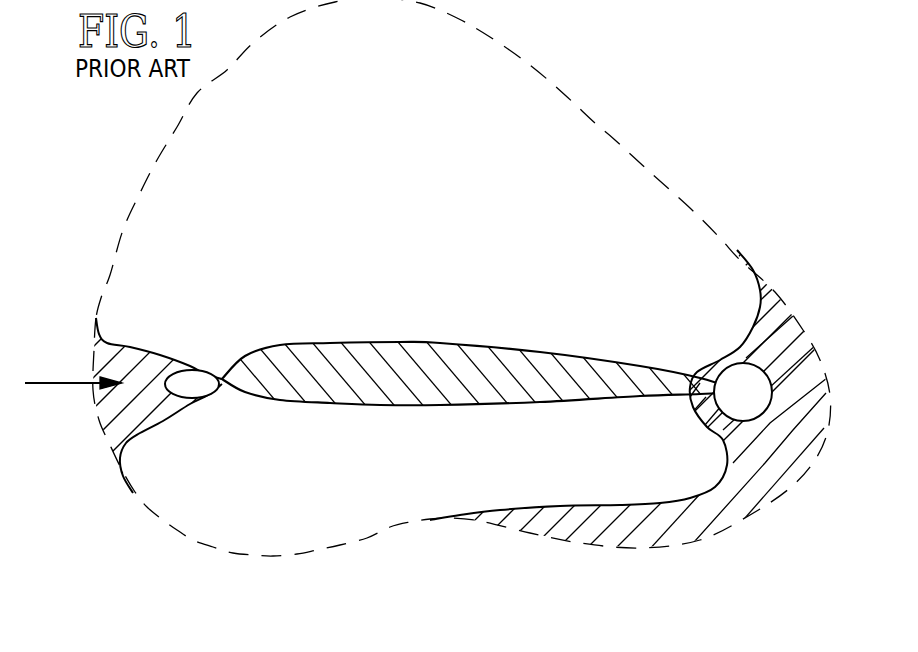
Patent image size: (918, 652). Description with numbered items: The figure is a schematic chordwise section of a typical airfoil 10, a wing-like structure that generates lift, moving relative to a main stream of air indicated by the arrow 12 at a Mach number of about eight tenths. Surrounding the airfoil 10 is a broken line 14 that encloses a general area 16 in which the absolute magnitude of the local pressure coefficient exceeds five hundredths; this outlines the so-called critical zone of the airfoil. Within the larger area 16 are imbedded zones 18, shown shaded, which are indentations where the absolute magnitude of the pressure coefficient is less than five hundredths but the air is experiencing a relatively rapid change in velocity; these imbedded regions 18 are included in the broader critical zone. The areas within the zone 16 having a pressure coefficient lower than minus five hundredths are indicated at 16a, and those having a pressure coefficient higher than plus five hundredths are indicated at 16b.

The airfoil 10 is at (582, 370).
The arrow 12 is at (50, 381).
The broken line 14 is at (616, 140).
The general area 16 is at (547, 309).
The areas having a Cp lower than minus 0.05 16a is at (418, 215).
The areas having a Cp higher than plus 0.05 16b is at (197, 378).
The imbedded zones 18 is at (106, 427).